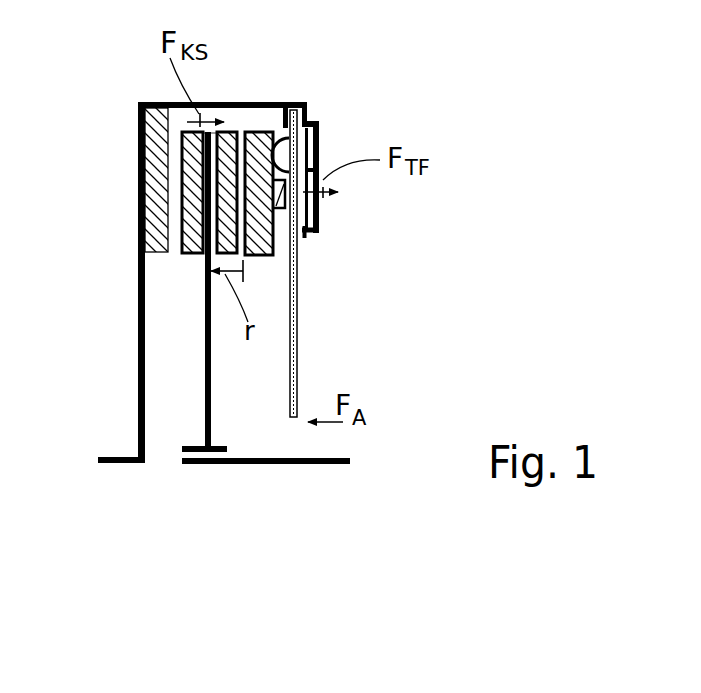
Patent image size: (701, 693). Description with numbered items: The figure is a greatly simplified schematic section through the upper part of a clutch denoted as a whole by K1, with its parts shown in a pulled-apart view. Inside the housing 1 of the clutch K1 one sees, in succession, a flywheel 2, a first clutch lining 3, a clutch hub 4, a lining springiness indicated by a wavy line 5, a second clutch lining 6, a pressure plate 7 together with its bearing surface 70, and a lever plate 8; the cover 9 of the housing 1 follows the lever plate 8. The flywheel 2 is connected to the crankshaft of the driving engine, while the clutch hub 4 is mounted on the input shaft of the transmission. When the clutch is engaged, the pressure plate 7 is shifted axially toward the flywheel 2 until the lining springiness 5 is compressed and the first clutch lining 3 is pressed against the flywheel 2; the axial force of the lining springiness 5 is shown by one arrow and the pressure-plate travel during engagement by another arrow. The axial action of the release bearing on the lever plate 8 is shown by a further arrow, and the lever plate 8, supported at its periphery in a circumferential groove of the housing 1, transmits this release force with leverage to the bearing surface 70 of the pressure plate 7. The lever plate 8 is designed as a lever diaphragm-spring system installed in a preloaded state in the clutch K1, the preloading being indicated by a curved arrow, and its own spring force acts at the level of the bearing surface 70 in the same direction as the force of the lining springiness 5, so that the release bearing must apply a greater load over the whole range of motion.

The housing 1 is at (138, 308).
The flywheel 2 is at (142, 222).
The first clutch lining 3 is at (185, 176).
The clutch hub 4 is at (205, 357).
The lining springiness 5 is at (215, 227).
The second clutch lining 6 is at (223, 133).
The pressure plate 7 is at (265, 242).
The lever plate 8 is at (297, 318).
The cover 9 is at (320, 128).
The bearing surface 70 is at (290, 215).
The clutch K1 is at (310, 78).